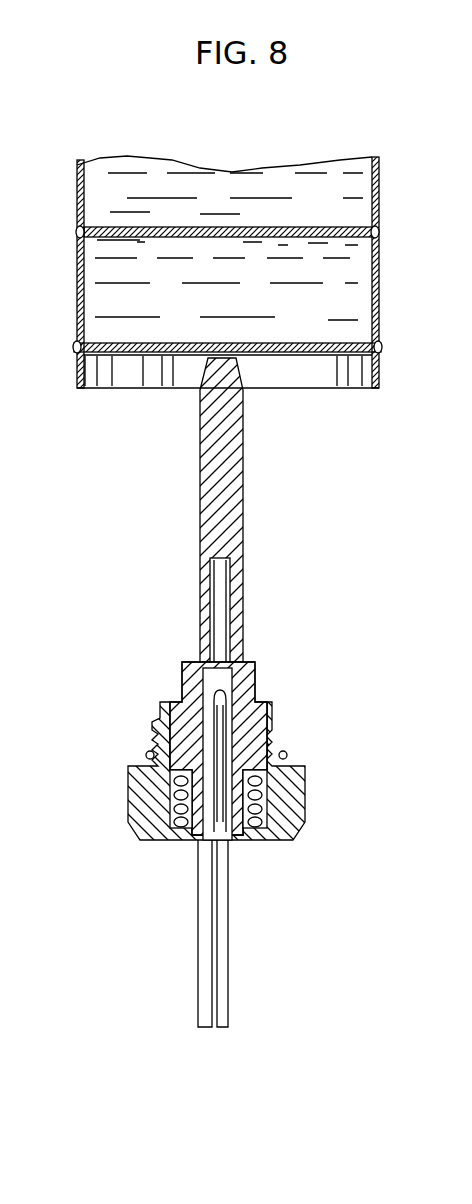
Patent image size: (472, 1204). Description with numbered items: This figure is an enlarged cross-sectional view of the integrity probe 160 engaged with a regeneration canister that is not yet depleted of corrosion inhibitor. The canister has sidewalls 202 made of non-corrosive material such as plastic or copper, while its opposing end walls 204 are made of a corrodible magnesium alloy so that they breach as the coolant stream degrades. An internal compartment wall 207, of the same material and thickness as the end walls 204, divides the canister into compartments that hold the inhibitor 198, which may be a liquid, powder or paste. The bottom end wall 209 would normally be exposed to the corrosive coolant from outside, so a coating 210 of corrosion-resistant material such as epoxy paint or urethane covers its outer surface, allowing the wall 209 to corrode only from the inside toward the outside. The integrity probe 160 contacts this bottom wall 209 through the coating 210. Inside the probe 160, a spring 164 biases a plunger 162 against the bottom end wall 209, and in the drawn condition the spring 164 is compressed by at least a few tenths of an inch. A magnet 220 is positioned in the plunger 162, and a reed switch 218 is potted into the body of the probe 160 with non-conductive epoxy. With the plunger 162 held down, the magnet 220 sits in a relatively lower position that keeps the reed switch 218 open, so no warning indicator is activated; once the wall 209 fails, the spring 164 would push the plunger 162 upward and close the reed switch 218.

The integrity probe 160 is at (247, 692).
The plunger 162 is at (166, 515).
The spring 164 is at (172, 845).
The inhibitor 198 is at (239, 284).
The sidewalls 202 is at (77, 300).
The opposing end walls 204 is at (280, 345).
The compartment wall 207 is at (220, 230).
The bottom end wall 209 is at (137, 300).
The coating 210 is at (137, 300).
The reed switch 218 is at (223, 752).
The magnet 220 is at (213, 625).